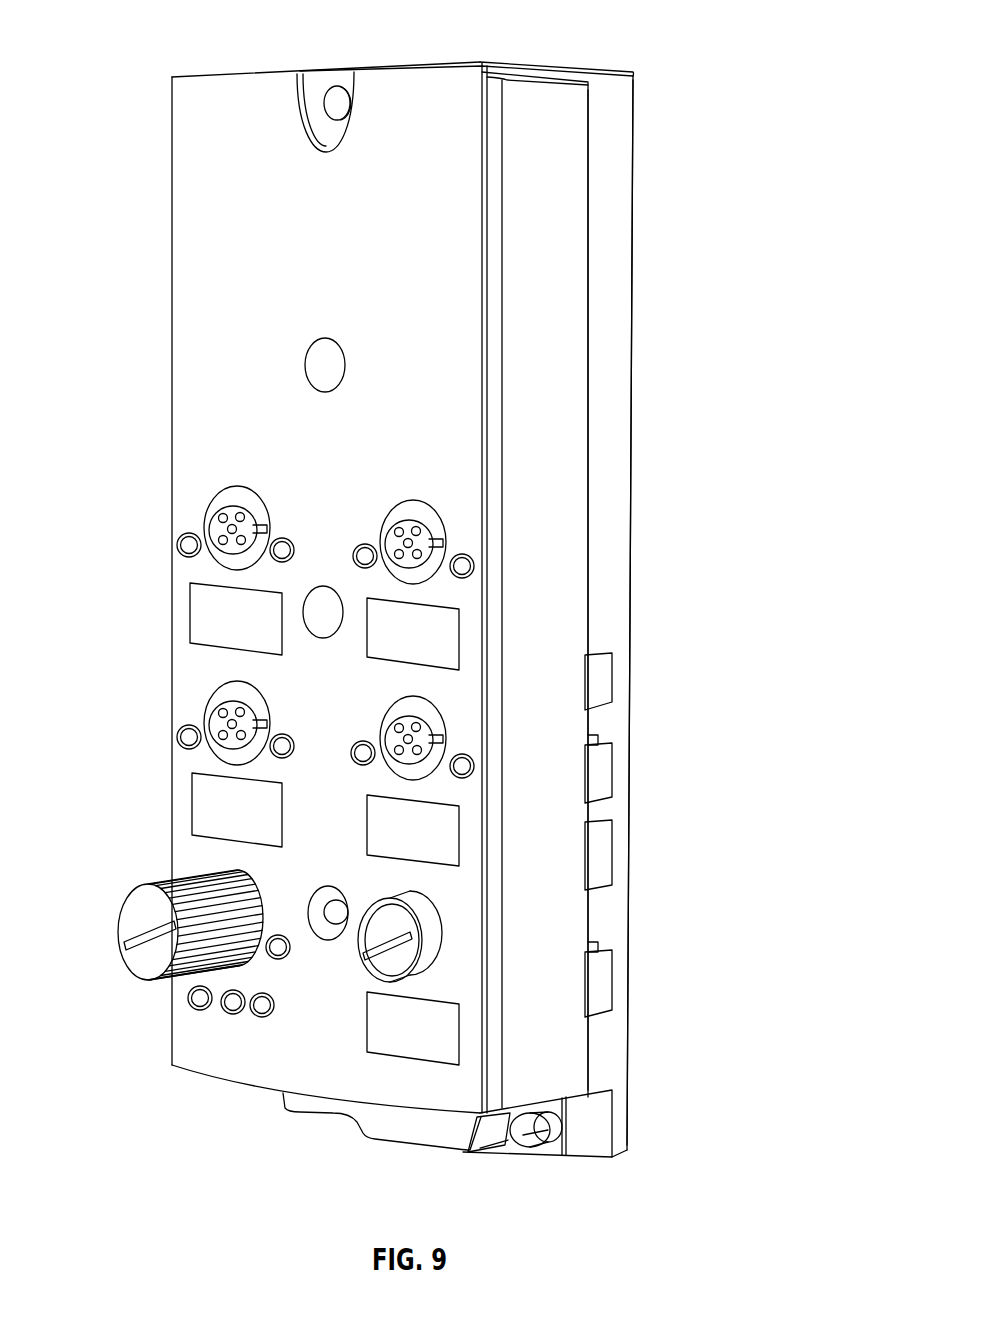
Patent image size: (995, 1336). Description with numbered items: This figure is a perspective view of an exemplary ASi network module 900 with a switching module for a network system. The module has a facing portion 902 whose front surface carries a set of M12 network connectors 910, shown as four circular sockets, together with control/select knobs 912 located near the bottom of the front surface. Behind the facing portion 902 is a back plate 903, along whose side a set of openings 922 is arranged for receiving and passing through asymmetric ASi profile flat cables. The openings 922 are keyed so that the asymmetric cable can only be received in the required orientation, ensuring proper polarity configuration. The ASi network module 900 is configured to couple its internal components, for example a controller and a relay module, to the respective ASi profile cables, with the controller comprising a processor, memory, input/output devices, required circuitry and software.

The ASi network module 900 is at (117, 27).
The facing portion 902 is at (280, 85).
The back plate 903 is at (622, 173).
The M12 network connectors 910 is at (377, 720).
The control/select knobs 912 is at (358, 946).
The openings 922 is at (615, 955).